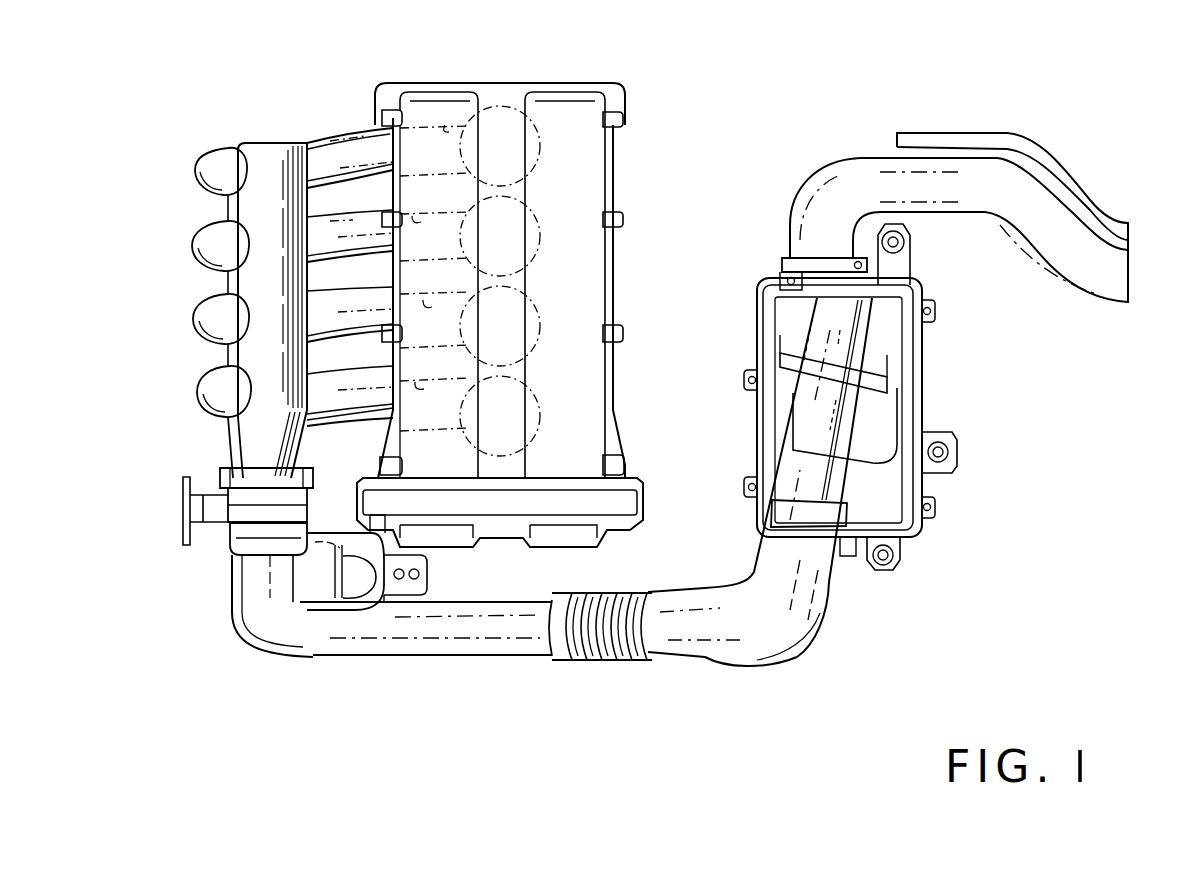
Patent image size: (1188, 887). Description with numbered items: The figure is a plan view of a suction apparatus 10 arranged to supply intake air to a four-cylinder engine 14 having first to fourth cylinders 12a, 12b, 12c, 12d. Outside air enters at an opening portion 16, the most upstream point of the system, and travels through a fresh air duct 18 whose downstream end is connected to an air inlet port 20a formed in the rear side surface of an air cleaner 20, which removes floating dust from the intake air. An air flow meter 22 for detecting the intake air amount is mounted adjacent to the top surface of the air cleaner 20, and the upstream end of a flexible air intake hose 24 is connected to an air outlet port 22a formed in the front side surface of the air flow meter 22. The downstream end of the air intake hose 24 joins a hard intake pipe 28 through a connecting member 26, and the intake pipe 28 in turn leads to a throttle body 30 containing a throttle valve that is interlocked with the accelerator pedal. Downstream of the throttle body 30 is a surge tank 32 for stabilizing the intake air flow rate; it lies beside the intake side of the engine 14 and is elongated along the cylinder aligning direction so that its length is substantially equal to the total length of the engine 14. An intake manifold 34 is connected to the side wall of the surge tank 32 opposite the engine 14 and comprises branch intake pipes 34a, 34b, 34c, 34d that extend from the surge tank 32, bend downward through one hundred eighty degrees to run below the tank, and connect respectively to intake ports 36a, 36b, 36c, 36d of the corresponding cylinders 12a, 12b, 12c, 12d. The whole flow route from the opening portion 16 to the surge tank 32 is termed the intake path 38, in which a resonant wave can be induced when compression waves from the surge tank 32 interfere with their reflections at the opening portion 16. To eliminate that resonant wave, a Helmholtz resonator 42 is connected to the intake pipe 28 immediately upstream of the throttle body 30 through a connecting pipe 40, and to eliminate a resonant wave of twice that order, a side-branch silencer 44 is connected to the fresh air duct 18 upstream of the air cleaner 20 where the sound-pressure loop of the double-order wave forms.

The suction apparatus 10 is at (680, 670).
The first cylinder 12a is at (538, 142).
The second cylinder 12b is at (530, 252).
The third cylinder 12c is at (535, 322).
The fourth cylinder 12d is at (530, 398).
The four-cylinder engine 14 is at (565, 80).
The opening portion 16 is at (1137, 292).
The fresh air duct 18 is at (993, 225).
The air cleaner 20 is at (926, 375).
The air inlet port 20a is at (779, 258).
The air flow meter 22 is at (822, 424).
The air outlet port 22a is at (918, 488).
The air intake hose 24 is at (836, 614).
The connecting member 26 is at (604, 664).
The intake pipe 28 is at (455, 656).
The throttle body 30 is at (230, 526).
The surge tank 32 is at (228, 446).
The intake manifold 34 is at (313, 133).
The branch intake pipe 34a is at (342, 131).
The branch intake pipe 34b is at (322, 218).
The branch intake pipe 34c is at (320, 298).
The branch intake pipe 34d is at (317, 378).
The intake port 36a is at (446, 124).
The intake port 36b is at (416, 217).
The intake port 36c is at (422, 302).
The intake port 36d is at (428, 368).
The intake path 38 is at (800, 664).
The connecting pipe 40 is at (347, 605).
The Helmholtz resonator 42 is at (327, 556).
The side-branch silencer 44 is at (958, 132).